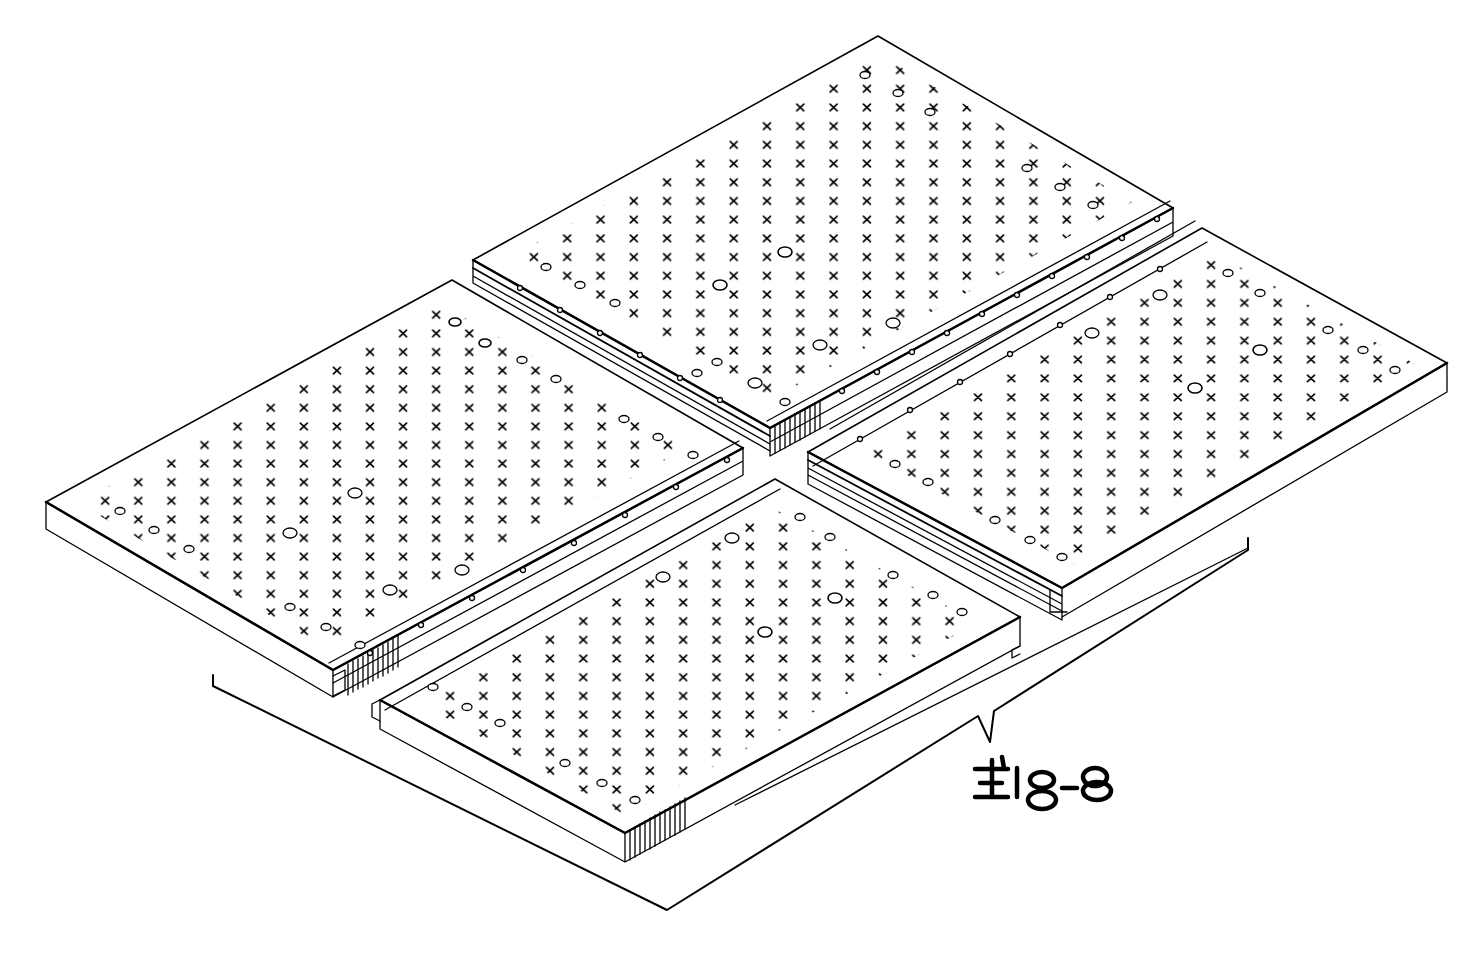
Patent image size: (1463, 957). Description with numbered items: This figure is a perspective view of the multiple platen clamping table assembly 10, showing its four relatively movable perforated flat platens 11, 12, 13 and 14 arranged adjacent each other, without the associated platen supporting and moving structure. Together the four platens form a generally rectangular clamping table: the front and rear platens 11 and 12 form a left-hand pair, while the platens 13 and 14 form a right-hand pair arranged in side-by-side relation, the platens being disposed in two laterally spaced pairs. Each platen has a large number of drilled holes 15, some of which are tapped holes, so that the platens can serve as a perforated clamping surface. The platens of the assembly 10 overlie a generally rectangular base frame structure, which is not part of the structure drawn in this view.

The multiple platen clamping table assembly 10 is at (1344, 487).
The platen 11 is at (735, 795).
The platen 12 is at (224, 395).
The platen 13 is at (1308, 290).
The platen 14 is at (1038, 136).
The drilled holes 15 is at (480, 340).